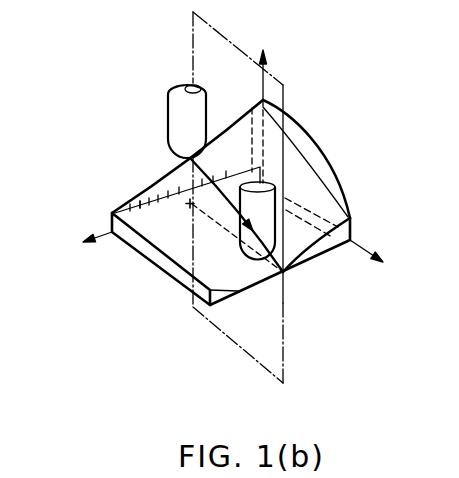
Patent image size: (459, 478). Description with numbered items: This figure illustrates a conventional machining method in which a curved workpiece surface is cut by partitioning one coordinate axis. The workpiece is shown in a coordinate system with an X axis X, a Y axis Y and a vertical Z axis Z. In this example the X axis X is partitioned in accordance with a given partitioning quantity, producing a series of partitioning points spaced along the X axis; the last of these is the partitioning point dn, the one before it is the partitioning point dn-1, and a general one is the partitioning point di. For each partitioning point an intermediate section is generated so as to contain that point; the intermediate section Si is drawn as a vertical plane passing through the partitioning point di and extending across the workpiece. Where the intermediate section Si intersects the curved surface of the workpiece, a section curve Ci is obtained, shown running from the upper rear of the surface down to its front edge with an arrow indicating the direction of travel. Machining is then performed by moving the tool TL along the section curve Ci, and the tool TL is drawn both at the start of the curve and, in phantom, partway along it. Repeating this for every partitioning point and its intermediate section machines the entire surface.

The tool TL is at (170, 97).
The X axis X is at (92, 228).
The Y axis Y is at (371, 249).
The Z axis Z is at (270, 110).
The partitioning point di is at (222, 235).
The partitioning point dn is at (111, 234).
The partitioning point dn-1 is at (122, 236).
The section curve Ci is at (285, 273).
The intermediate section Si is at (265, 370).